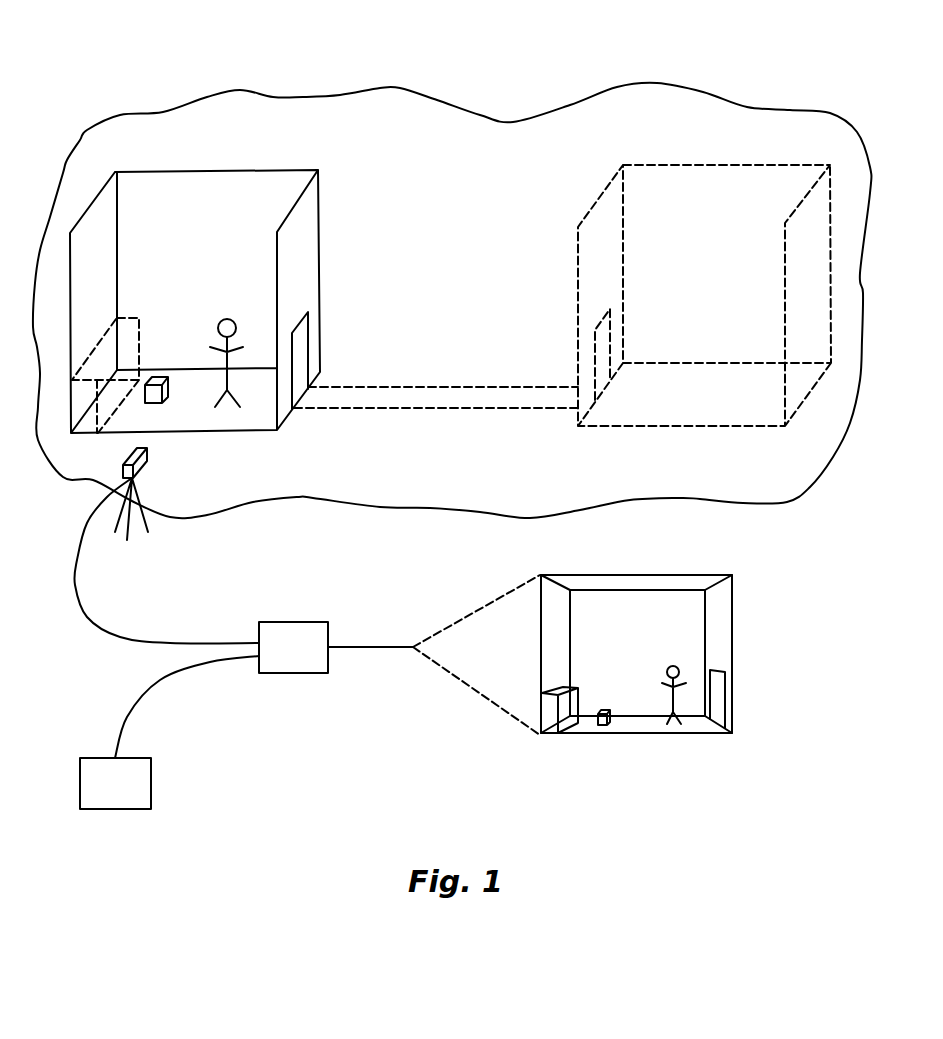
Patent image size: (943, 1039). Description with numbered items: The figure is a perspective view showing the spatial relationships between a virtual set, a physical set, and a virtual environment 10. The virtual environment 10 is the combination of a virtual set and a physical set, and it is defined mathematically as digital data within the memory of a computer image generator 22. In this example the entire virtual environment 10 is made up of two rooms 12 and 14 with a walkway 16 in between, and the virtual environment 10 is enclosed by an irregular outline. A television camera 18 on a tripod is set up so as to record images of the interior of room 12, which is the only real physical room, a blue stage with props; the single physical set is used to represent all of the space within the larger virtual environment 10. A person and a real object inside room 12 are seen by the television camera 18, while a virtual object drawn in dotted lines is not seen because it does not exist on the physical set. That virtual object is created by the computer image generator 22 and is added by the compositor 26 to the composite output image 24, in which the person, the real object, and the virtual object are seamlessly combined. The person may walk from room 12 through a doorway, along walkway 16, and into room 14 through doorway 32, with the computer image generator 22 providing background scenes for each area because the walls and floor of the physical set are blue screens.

The virtual environment 10 is at (382, 88).
The room 12 is at (237, 435).
The room 14 is at (647, 427).
The walkway 16 is at (433, 387).
The television camera 18 is at (148, 457).
The computer image generator 22 is at (151, 770).
The composite output image 24 is at (735, 635).
The compositor 26 is at (273, 622).
The doorway 32 is at (610, 337).